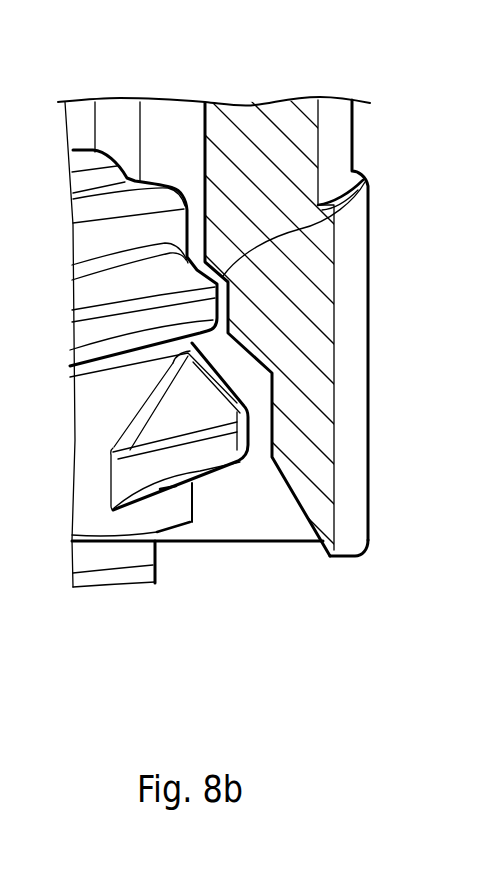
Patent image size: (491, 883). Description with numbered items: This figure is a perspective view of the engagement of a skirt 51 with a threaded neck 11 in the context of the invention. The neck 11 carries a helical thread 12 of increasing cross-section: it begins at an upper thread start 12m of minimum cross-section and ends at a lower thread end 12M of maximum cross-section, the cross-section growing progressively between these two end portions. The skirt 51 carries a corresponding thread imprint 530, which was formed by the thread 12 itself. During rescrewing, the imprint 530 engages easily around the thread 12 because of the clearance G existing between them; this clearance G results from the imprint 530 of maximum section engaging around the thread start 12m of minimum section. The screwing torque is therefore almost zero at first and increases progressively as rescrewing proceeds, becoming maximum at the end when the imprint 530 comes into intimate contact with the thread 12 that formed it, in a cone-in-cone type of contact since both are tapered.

The neck 11 is at (88, 517).
The thread 12 is at (138, 438).
The upper thread start 12m is at (197, 313).
The lower thread end 12M is at (217, 443).
The skirt 51 is at (257, 147).
The thread imprint 530 is at (228, 292).
The clearance G is at (366, 178).